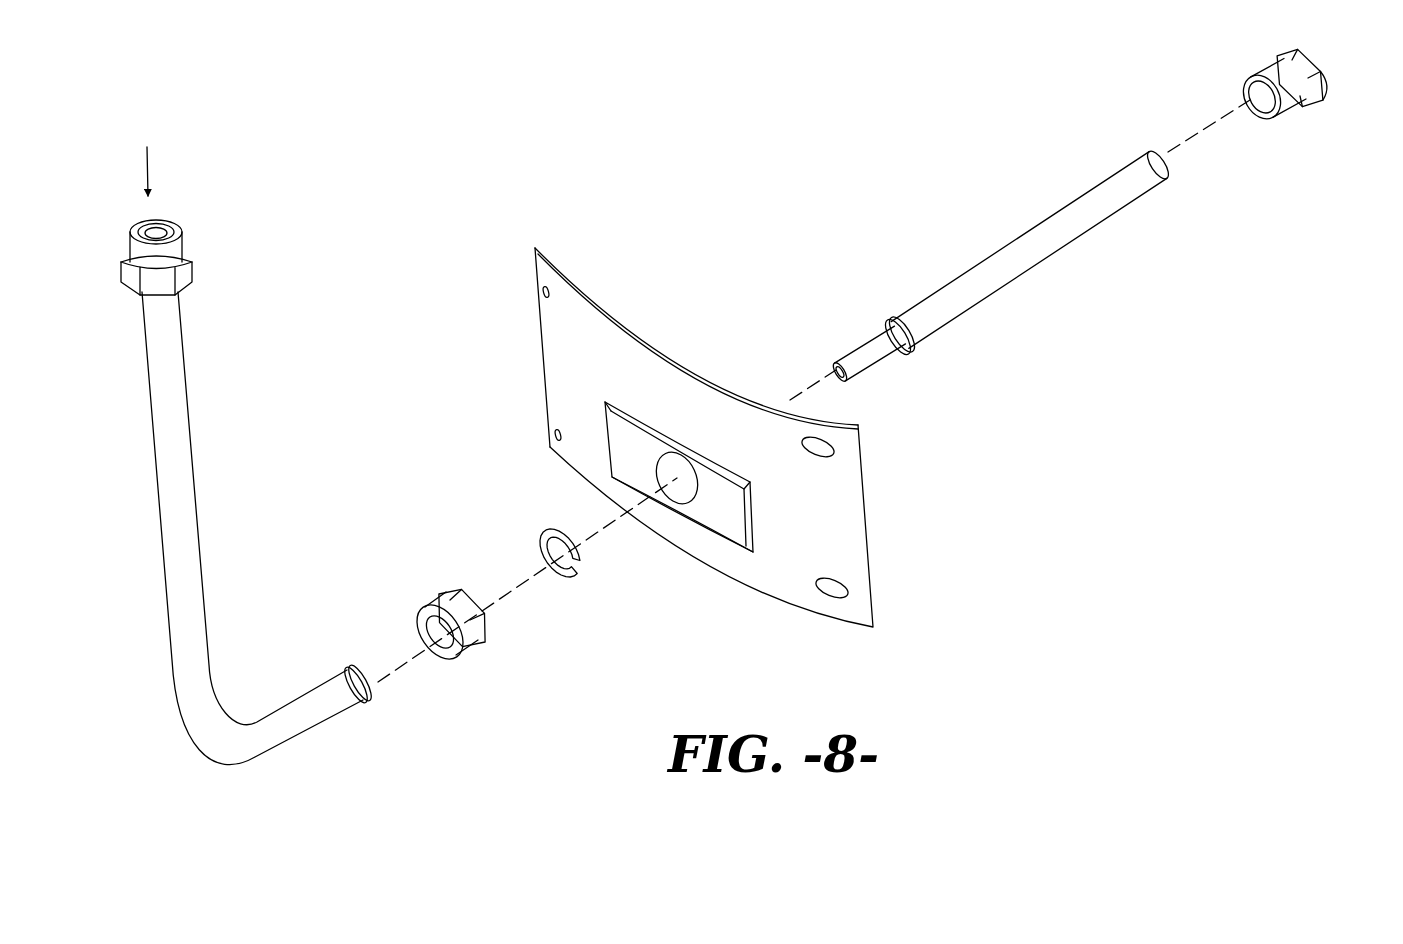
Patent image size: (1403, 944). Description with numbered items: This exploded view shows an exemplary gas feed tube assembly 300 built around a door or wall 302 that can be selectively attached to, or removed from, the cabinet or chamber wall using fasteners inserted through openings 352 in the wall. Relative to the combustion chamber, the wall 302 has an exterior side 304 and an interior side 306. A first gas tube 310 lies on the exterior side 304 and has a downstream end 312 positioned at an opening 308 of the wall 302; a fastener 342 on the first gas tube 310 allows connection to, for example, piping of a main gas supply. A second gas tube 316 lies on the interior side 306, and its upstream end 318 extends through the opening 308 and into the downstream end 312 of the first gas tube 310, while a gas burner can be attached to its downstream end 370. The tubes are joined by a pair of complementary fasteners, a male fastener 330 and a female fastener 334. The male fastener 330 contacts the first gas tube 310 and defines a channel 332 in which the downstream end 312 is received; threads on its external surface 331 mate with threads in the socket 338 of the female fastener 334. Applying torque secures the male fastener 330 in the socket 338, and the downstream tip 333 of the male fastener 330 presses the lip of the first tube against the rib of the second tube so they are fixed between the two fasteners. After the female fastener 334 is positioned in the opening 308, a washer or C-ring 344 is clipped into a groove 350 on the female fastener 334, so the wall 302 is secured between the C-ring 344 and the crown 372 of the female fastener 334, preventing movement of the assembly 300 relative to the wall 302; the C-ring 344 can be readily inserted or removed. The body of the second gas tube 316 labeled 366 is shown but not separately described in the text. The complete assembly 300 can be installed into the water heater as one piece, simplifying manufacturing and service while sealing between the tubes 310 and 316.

The gas feed tube assembly 300 is at (747, 190).
The door or wall 302 is at (565, 358).
The exterior side 304 is at (853, 610).
The interior side 306 is at (633, 328).
The opening 308 is at (682, 478).
The first gas tube 310 is at (305, 722).
The downstream end 312 is at (384, 699).
The second gas tube 316 is at (1020, 248).
The upstream end 318 is at (855, 334).
The male fastener 330 is at (427, 624).
The external surface 331 is at (458, 586).
The channel 332 is at (445, 648).
The downstream tip 333 is at (481, 588).
The female fastener 334 is at (1292, 46).
The socket 338 is at (1265, 107).
The fastener 342 is at (182, 243).
The washer or C-ring 344 is at (547, 522).
The groove 350 is at (1296, 93).
The openings 352 is at (545, 296).
The tube body 366 is at (1096, 182).
The downstream end 370 is at (1158, 193).
The crown 372 is at (1331, 74).